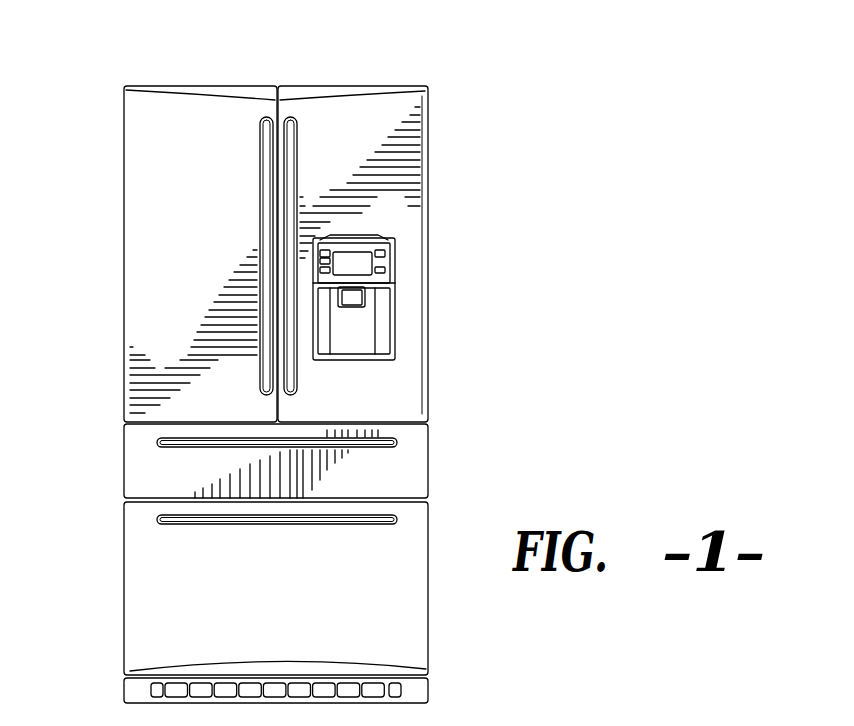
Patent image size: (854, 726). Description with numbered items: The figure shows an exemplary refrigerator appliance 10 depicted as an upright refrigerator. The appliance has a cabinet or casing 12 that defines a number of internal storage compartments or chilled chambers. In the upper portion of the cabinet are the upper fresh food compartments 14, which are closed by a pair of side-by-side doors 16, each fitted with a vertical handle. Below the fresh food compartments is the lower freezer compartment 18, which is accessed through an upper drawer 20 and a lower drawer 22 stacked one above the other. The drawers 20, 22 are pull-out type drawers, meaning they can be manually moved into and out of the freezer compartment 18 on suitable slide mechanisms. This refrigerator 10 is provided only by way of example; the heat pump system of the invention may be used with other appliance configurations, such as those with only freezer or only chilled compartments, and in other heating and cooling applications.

The refrigerator appliance 10 is at (308, 394).
The cabinet or casing 12 is at (428, 338).
The upper fresh food compartments 14 is at (156, 229).
The doors 16 is at (185, 306).
The lower freezer compartment 18 is at (310, 561).
The upper drawer 20 is at (178, 487).
The lower drawer 22 is at (292, 606).